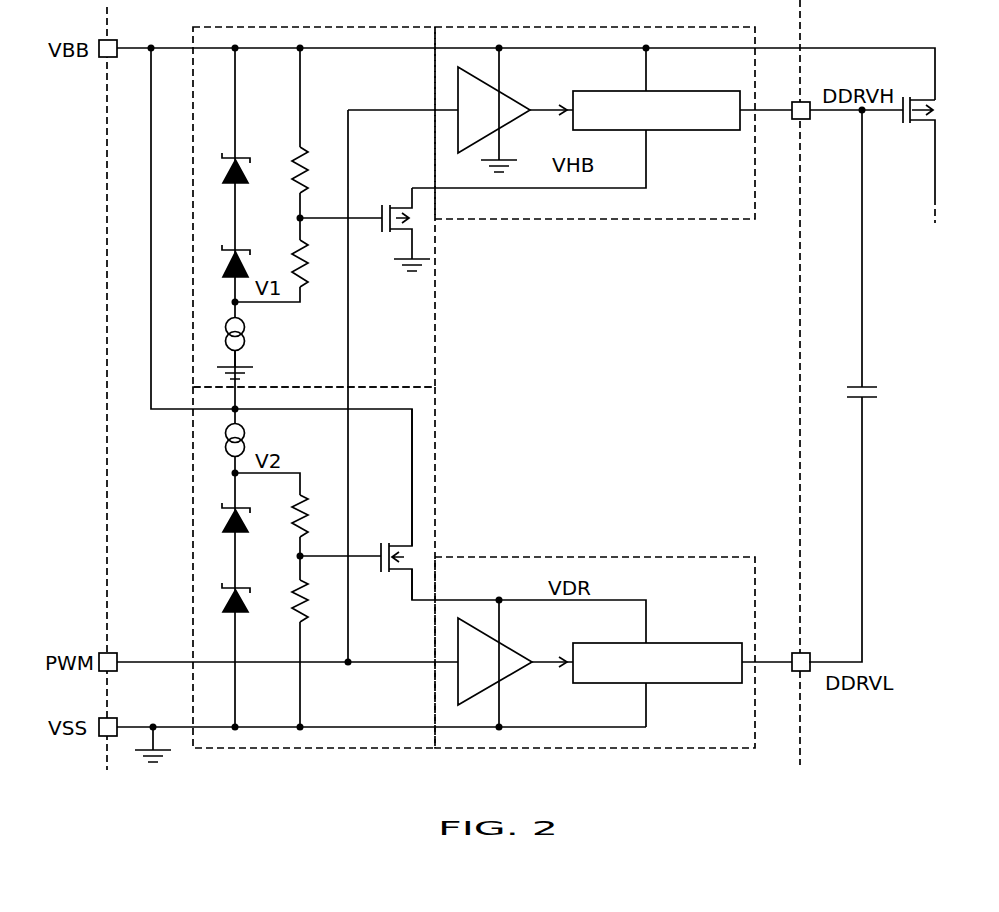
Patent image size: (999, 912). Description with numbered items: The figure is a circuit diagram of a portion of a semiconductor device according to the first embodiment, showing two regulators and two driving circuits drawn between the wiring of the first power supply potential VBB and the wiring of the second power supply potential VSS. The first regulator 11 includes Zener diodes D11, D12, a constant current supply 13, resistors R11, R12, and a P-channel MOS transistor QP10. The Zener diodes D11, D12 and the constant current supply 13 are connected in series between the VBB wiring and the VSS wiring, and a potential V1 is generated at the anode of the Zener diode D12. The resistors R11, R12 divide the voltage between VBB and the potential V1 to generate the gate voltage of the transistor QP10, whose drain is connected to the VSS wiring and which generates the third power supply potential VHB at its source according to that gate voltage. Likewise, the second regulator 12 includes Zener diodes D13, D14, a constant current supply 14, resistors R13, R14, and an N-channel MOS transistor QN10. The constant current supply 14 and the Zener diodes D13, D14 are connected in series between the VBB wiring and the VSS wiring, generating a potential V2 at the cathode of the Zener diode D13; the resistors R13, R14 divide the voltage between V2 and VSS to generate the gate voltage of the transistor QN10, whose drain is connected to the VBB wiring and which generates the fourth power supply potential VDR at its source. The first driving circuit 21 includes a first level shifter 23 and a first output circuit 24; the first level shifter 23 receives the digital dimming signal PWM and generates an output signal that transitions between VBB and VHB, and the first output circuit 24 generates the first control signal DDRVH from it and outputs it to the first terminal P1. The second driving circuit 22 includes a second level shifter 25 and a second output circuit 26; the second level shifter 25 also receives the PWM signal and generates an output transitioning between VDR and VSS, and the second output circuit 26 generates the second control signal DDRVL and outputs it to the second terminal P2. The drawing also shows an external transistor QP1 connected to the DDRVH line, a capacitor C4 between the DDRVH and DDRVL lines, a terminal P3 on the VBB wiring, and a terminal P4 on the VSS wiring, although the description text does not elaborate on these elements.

The first regulator 11 is at (437, 298).
The second regulator 12 is at (437, 478).
The constant current supply 13 is at (250, 337).
The constant current supply 14 is at (252, 443).
The first driving circuit 21 is at (586, 220).
The second driving circuit 22 is at (586, 557).
The first level shifter 23 is at (503, 94).
The first output circuit 24 is at (675, 91).
The second level shifter 25 is at (511, 650).
The second output circuit 26 is at (678, 643).
The Zener diode D11 is at (252, 158).
The Zener diode D12 is at (252, 250).
The Zener diode D13 is at (252, 506).
The Zener diode D14 is at (252, 585).
The resistor R11 is at (319, 165).
The resistor R12 is at (320, 257).
The resistor R13 is at (319, 507).
The resistor R14 is at (319, 593).
The P-channel MOS transistor QP10 is at (383, 217).
The N-channel MOS transistor QN10 is at (383, 504).
The external P-type transistor QP1 is at (943, 160).
The capacitor C4 is at (854, 386).
The first terminal P1 is at (790, 97).
The second terminal P2 is at (790, 651).
The terminal P3 is at (122, 38).
The terminal P4 is at (125, 718).